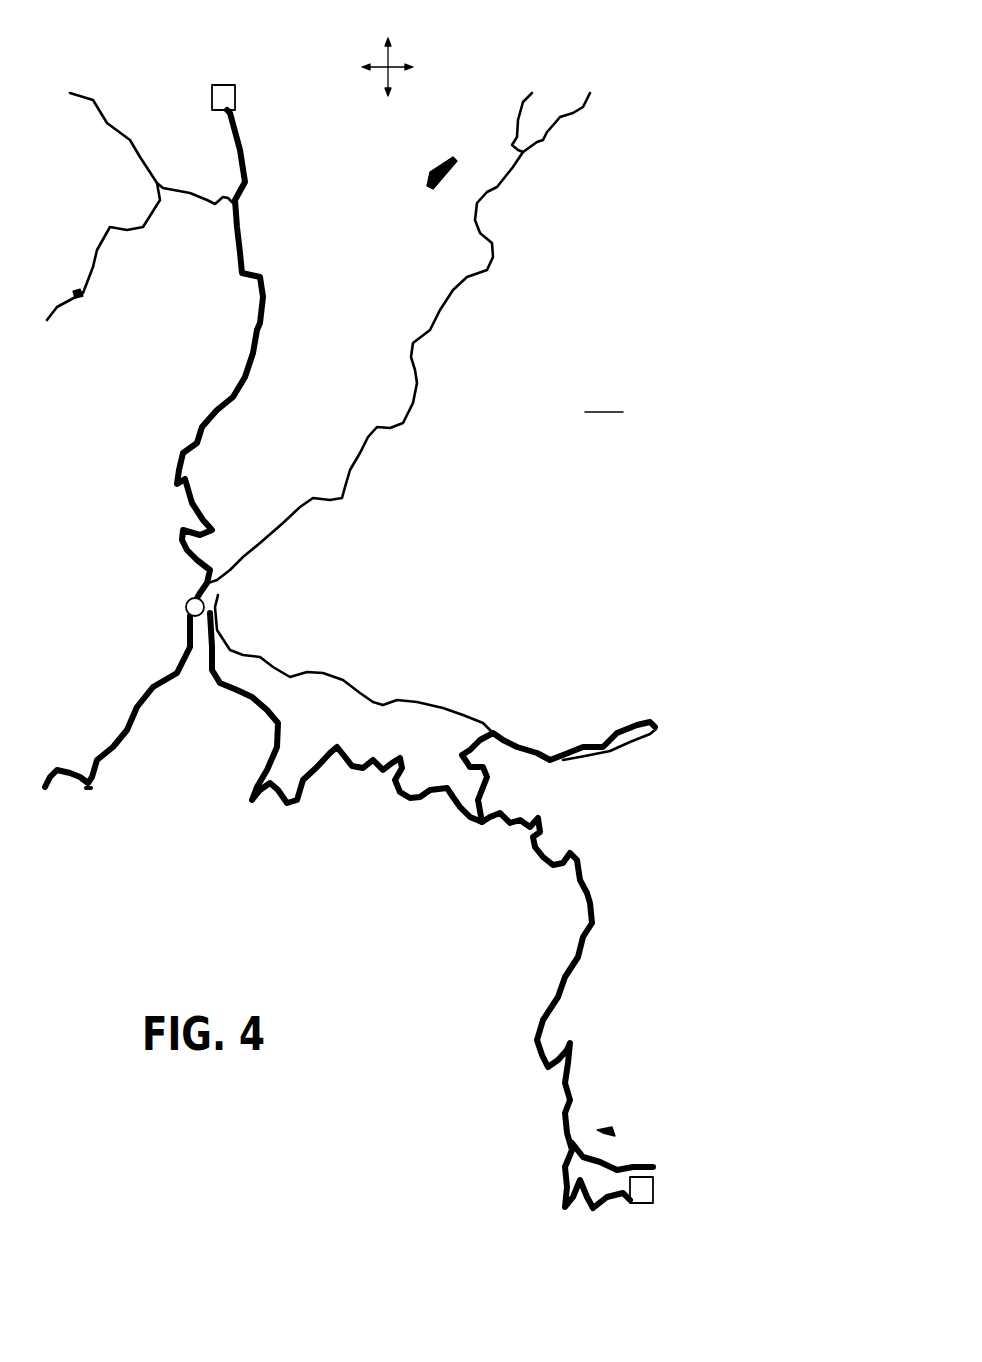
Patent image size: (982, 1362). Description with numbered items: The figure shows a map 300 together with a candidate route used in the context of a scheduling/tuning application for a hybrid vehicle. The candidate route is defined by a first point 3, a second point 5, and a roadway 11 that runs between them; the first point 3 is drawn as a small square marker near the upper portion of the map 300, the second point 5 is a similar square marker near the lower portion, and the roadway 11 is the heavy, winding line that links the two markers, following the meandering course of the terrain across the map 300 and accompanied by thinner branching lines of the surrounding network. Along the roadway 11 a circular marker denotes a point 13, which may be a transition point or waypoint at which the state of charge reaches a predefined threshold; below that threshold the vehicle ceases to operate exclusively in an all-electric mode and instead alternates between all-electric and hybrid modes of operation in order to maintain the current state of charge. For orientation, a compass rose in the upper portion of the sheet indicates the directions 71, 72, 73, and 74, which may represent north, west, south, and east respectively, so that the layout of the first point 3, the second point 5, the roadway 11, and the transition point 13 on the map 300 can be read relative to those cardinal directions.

The first point 3 is at (212, 88).
The second point 5 is at (655, 1180).
The roadway 11 is at (263, 324).
The transition point 13 is at (186, 612).
The map 300 is at (606, 400).
The north direction 71 is at (394, 40).
The west direction 72 is at (361, 66).
The south direction 73 is at (394, 94).
The east direction 74 is at (415, 66).